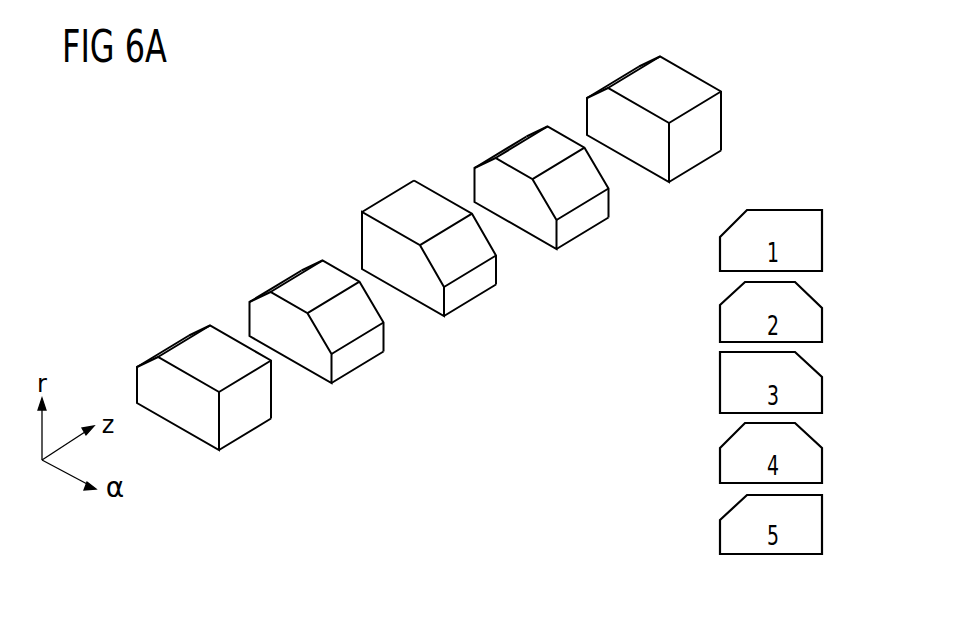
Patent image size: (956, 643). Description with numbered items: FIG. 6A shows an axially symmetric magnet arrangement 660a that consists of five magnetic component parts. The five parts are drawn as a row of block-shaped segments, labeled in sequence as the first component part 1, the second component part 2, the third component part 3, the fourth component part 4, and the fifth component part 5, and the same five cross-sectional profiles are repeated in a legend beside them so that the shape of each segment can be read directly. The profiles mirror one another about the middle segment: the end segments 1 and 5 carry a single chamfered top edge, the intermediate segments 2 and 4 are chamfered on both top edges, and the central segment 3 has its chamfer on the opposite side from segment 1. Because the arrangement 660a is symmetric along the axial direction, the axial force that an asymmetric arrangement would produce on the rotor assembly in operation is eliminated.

The magnet arrangement 660a is at (312, 207).
The magnet segment 1 (top-left chamfer) 1 is at (654, 128).
The magnet segment 2 (both top corners chamfered) 2 is at (542, 198).
The magnet segment 3 (top-right chamfer) 3 is at (429, 259).
The magnet segment 4 (both top corners chamfered) 4 is at (317, 332).
The magnet segment 5 (top-left chamfer) 5 is at (204, 398).